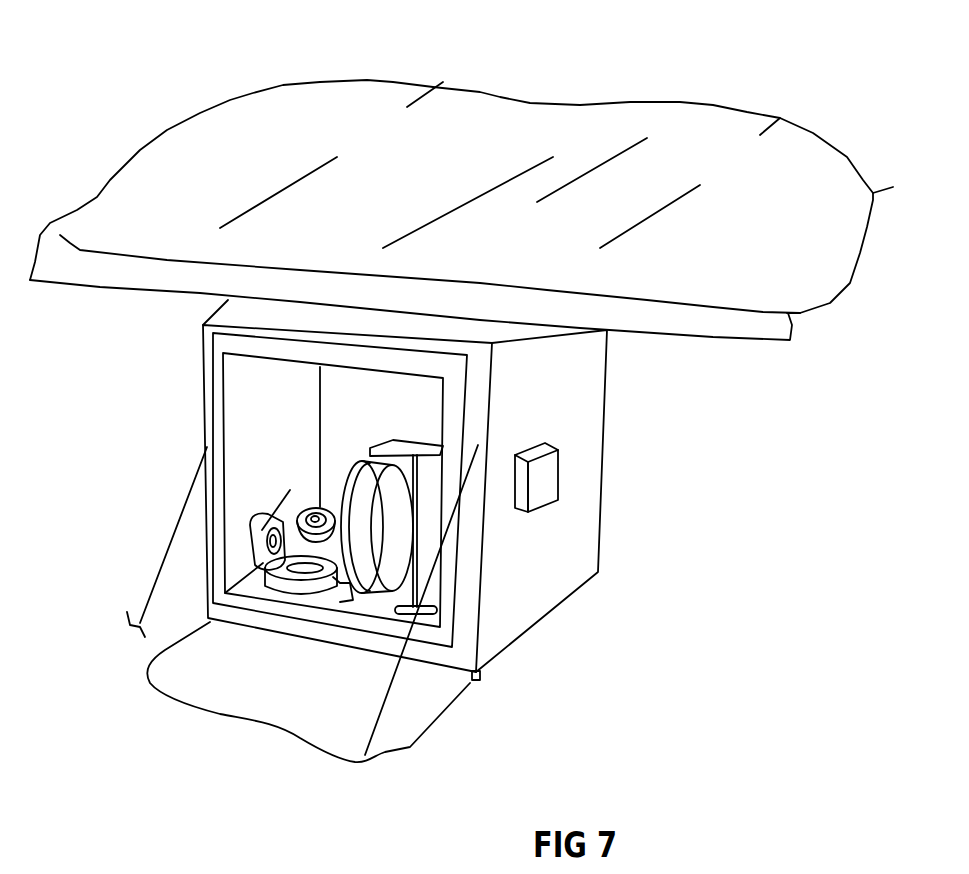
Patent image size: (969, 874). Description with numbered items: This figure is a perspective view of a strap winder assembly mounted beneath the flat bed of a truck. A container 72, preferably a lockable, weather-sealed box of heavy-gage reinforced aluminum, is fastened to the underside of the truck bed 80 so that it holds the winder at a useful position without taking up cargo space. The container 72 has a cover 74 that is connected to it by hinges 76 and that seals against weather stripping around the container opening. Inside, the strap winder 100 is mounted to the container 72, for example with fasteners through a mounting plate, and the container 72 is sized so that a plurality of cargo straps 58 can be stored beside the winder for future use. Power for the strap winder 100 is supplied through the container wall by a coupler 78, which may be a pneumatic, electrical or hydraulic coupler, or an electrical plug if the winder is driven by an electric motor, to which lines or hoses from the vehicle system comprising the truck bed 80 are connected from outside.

The truck bed 80 is at (390, 103).
The container 72 is at (572, 548).
The cover 74 is at (256, 692).
The hinges 76 is at (485, 677).
The coupler 78 is at (537, 447).
The cargo straps 58 is at (294, 563).
The strap winder 100 is at (369, 435).